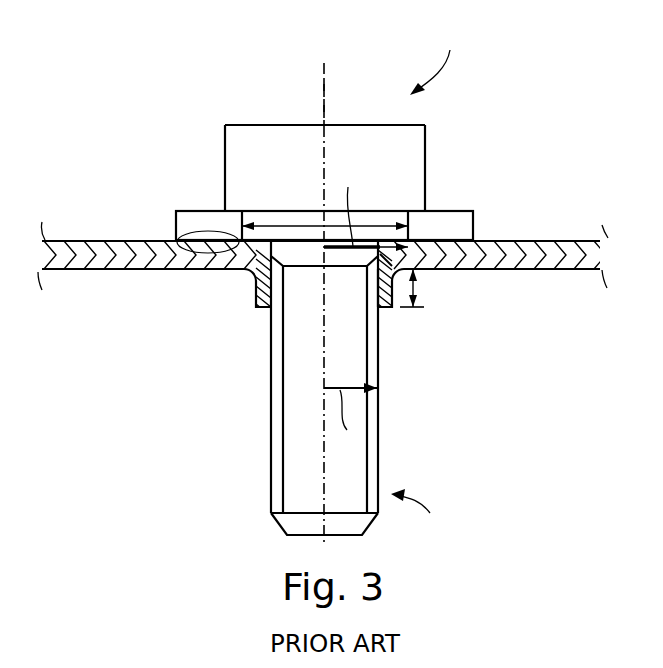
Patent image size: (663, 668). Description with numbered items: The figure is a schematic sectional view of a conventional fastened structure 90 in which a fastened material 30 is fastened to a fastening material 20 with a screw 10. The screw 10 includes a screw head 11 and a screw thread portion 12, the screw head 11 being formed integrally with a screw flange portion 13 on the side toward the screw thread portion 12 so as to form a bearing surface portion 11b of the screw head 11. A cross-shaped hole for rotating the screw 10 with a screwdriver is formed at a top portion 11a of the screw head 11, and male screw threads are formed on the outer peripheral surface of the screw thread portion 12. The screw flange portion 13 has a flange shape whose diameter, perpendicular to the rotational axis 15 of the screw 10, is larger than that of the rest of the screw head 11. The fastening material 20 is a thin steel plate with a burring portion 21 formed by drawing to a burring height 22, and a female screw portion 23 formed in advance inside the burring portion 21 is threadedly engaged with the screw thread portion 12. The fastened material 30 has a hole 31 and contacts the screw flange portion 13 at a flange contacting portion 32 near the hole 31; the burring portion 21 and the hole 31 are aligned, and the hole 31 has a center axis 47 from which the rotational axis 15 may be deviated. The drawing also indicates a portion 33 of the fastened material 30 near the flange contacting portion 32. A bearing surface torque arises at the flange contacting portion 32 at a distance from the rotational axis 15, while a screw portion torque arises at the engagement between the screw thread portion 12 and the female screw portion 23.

The screw 10 is at (338, 304).
The screw head 11 is at (359, 142).
The top portion 11a is at (365, 125).
The bearing surface portion 11b is at (465, 252).
The screw thread portion 12 is at (277, 407).
The screw flange portion 13 is at (440, 223).
The rotational axis 15 is at (325, 78).
The fastening material 20 is at (547, 260).
The burring portion 21 is at (376, 307).
The burring height 22 is at (418, 290).
The female screw portion 23 is at (370, 310).
The fastened material 30 is at (560, 248).
The hole 31 is at (293, 226).
The flange contacting portion 32 is at (207, 228).
The sealing (adhesive) portion 33 is at (237, 252).
The center axis 47 is at (323, 105).
The fastened structure 90 is at (437, 61).